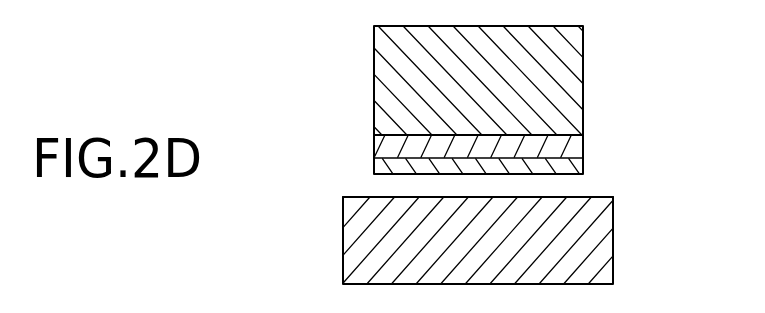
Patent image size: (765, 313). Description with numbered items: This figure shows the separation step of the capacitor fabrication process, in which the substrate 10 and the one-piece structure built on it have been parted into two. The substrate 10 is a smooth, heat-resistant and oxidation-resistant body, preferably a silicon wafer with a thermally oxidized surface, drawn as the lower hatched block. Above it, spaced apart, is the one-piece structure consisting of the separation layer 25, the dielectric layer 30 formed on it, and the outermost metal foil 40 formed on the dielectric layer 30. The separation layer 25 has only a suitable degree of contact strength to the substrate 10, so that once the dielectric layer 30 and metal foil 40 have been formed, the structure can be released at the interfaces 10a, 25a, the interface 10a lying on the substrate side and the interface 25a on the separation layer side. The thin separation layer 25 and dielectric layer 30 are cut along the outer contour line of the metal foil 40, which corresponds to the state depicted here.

The metal foil 40 is at (572, 63).
The dielectric layer 30 is at (583, 148).
The separation layer 25 is at (583, 167).
The interface 25a is at (556, 177).
The substrate 10 is at (604, 243).
The interface 10a is at (565, 198).